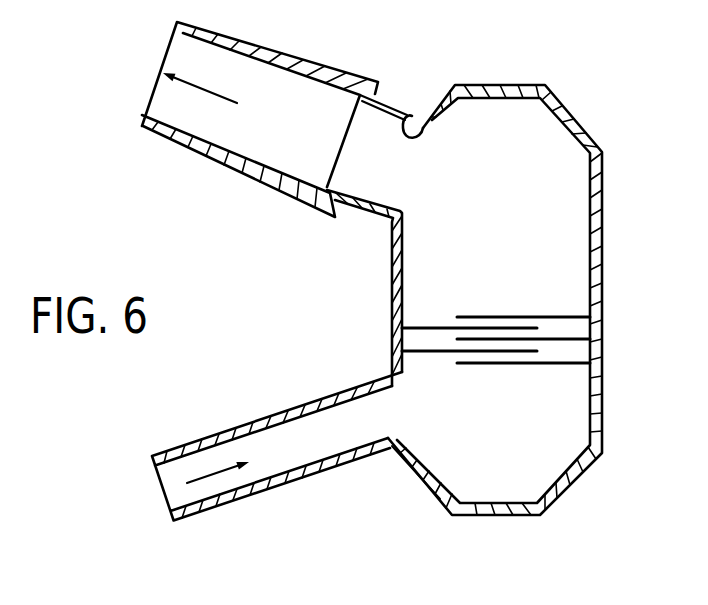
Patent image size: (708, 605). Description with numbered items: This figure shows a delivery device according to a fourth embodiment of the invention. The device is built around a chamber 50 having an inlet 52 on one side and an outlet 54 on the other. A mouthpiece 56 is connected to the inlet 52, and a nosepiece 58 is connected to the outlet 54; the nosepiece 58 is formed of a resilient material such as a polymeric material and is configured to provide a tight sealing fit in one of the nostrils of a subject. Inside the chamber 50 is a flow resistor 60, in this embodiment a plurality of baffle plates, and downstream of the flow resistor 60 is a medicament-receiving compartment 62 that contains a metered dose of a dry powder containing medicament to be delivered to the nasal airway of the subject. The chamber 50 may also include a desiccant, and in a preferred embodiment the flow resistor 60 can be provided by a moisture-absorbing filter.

The chamber 50 is at (607, 195).
The inlet 52 is at (397, 440).
The outlet 54 is at (403, 117).
The mouthpiece 56 is at (257, 420).
The nosepiece 58 is at (283, 197).
The flow resistor 60 is at (537, 317).
The medicament-receiving compartment 62 is at (525, 135).